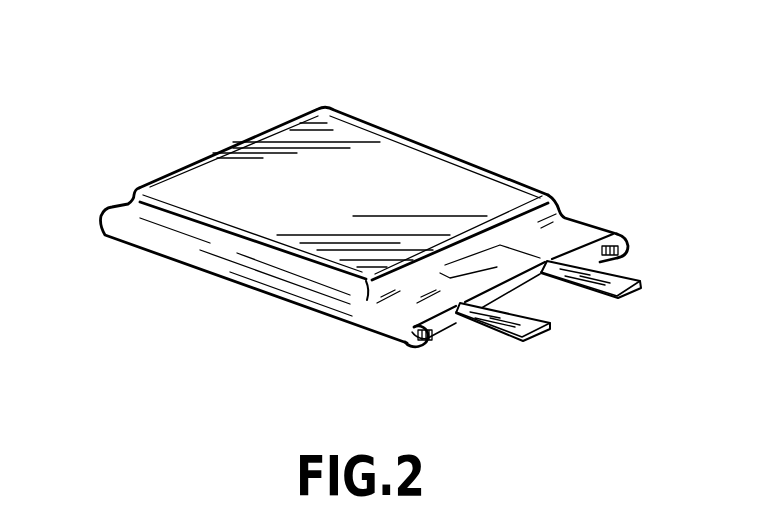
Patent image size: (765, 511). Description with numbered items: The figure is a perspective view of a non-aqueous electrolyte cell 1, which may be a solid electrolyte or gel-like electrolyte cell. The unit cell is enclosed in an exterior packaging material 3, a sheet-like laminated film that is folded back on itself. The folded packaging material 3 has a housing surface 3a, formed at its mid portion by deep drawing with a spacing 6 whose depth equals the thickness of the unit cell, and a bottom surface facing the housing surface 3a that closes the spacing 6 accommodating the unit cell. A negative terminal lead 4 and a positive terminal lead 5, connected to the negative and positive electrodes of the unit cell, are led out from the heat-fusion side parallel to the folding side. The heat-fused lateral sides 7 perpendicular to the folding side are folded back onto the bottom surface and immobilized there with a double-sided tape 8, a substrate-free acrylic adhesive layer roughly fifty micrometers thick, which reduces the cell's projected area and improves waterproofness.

The non-aqueous electrolyte cell 1 is at (162, 134).
The spacing 6 is at (437, 158).
The exterior packaging material 3 is at (567, 212).
The housing surface 3a is at (597, 234).
The negative terminal lead 4 is at (506, 322).
The positive terminal lead 5 is at (621, 283).
The lateral sides 7 is at (411, 345).
The double-sided tape 8 is at (423, 341).